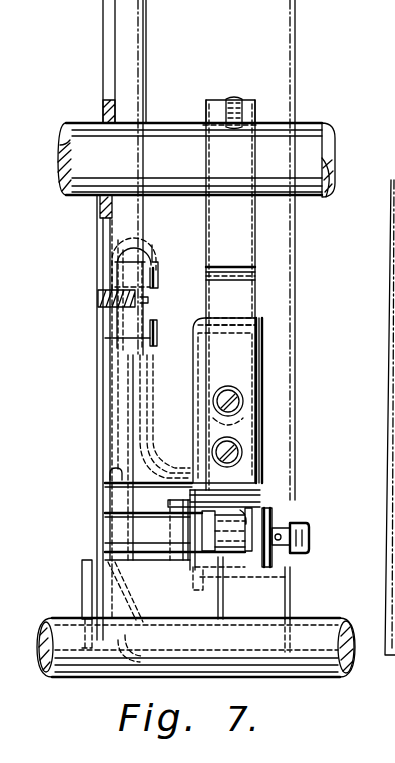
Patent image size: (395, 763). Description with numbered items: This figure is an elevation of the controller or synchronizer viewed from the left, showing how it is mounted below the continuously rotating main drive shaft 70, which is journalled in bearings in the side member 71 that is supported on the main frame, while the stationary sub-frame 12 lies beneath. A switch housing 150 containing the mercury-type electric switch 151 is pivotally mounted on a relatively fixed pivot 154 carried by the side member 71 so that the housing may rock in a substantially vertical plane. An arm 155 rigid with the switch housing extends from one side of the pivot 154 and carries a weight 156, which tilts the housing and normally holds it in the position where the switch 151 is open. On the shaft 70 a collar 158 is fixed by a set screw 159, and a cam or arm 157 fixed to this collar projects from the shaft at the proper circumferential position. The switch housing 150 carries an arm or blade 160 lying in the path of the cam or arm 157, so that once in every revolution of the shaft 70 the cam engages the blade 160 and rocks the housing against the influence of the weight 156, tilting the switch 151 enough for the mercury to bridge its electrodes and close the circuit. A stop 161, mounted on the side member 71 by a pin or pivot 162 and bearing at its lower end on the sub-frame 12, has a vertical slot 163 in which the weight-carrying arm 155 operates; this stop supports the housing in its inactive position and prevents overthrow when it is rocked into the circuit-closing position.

The sub-frame 12 is at (330, 684).
The main drive shaft 70 is at (312, 130).
The side member 71 is at (97, 418).
The switch housing 150 is at (205, 318).
The electric switch 151 is at (242, 420).
The pivot 154 is at (283, 555).
The arm 155 is at (192, 583).
The weight 156 is at (224, 611).
The cam or arm 157 is at (213, 200).
The collar 158 is at (208, 110).
The set screw 159 is at (235, 98).
The arm or blade 160 is at (206, 233).
The stop 161 is at (110, 476).
The pin or pivot 162 is at (92, 581).
The vertical slot 163 is at (213, 563).